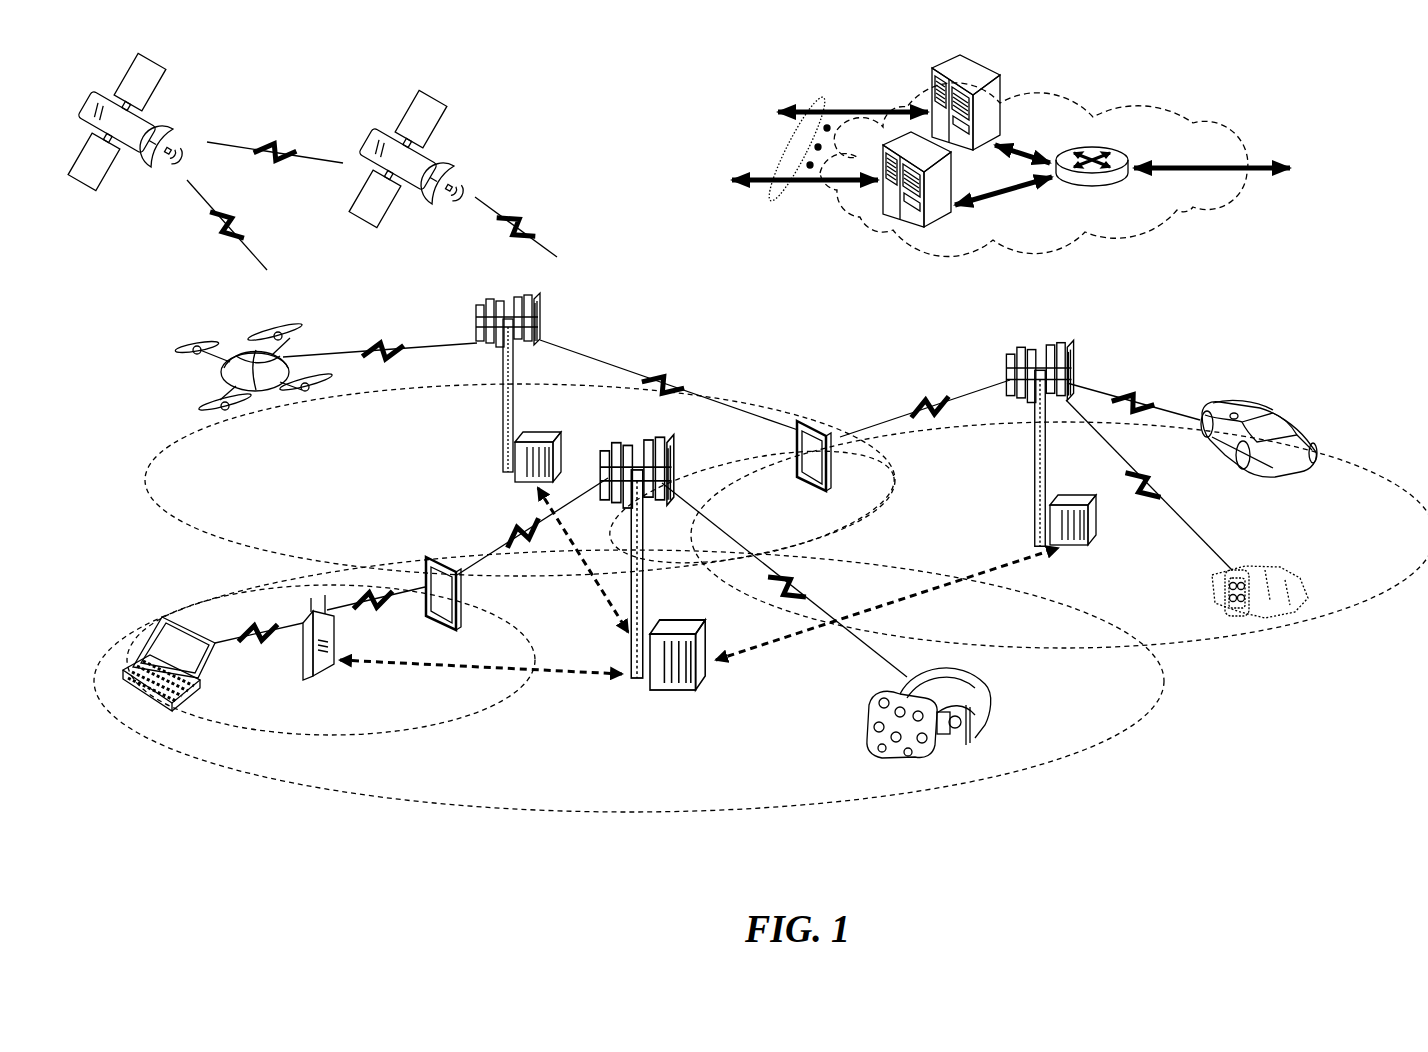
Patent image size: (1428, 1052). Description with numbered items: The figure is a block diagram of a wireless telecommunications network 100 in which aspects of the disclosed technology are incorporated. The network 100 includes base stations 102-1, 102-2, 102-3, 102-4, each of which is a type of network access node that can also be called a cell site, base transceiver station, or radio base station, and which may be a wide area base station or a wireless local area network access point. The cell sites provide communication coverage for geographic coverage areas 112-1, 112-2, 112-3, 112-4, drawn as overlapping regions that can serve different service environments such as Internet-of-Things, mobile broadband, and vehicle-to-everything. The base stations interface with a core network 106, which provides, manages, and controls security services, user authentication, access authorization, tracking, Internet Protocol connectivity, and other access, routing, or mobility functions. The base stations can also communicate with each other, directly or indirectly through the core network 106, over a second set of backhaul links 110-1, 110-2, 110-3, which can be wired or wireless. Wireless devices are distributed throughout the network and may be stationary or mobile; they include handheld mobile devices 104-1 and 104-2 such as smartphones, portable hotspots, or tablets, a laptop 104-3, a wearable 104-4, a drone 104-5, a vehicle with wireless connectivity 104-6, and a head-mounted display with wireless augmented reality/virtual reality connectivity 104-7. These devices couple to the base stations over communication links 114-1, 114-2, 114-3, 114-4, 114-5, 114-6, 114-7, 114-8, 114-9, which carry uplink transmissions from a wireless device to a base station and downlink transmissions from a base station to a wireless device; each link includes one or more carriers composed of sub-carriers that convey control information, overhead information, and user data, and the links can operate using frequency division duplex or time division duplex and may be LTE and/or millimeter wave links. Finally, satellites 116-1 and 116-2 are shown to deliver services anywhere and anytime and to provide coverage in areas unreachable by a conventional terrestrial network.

The wireless telecommunications network 100 is at (1369, 124).
The core network 106 is at (1123, 236).
The satellite 116-1 is at (160, 130).
The satellite 116-2 is at (444, 167).
The base station 102-1 is at (637, 683).
The base station 102-2 is at (490, 428).
The base station 102-3 is at (1030, 462).
The base station 102-4 is at (298, 667).
The handheld mobile device 104-1 is at (457, 608).
The handheld mobile device 104-2 is at (803, 460).
The laptop 104-3 is at (142, 712).
The wearable 104-4 is at (1290, 543).
The drone 104-5 is at (262, 393).
The vehicle with wireless connectivity 104-6 is at (1278, 412).
The head-mounted display 104-7 is at (980, 700).
The backhaul link 110-1 is at (378, 668).
The backhaul link 110-2 is at (950, 590).
The backhaul link 110-3 is at (598, 598).
The geographic coverage area 112-1 is at (568, 815).
The geographic coverage area 112-2 is at (450, 730).
The geographic coverage area 112-3 is at (208, 537).
The geographic coverage area 112-4 is at (1336, 462).
The communication link 114-1 is at (800, 592).
The communication link 114-2 is at (518, 530).
The communication link 114-3 is at (232, 640).
The communication link 114-4 is at (385, 612).
The communication link 114-5 is at (383, 337).
The communication link 114-6 is at (678, 380).
The communication link 114-7 is at (900, 402).
The communication link 114-8 is at (1157, 500).
The communication link 114-9 is at (1140, 398).